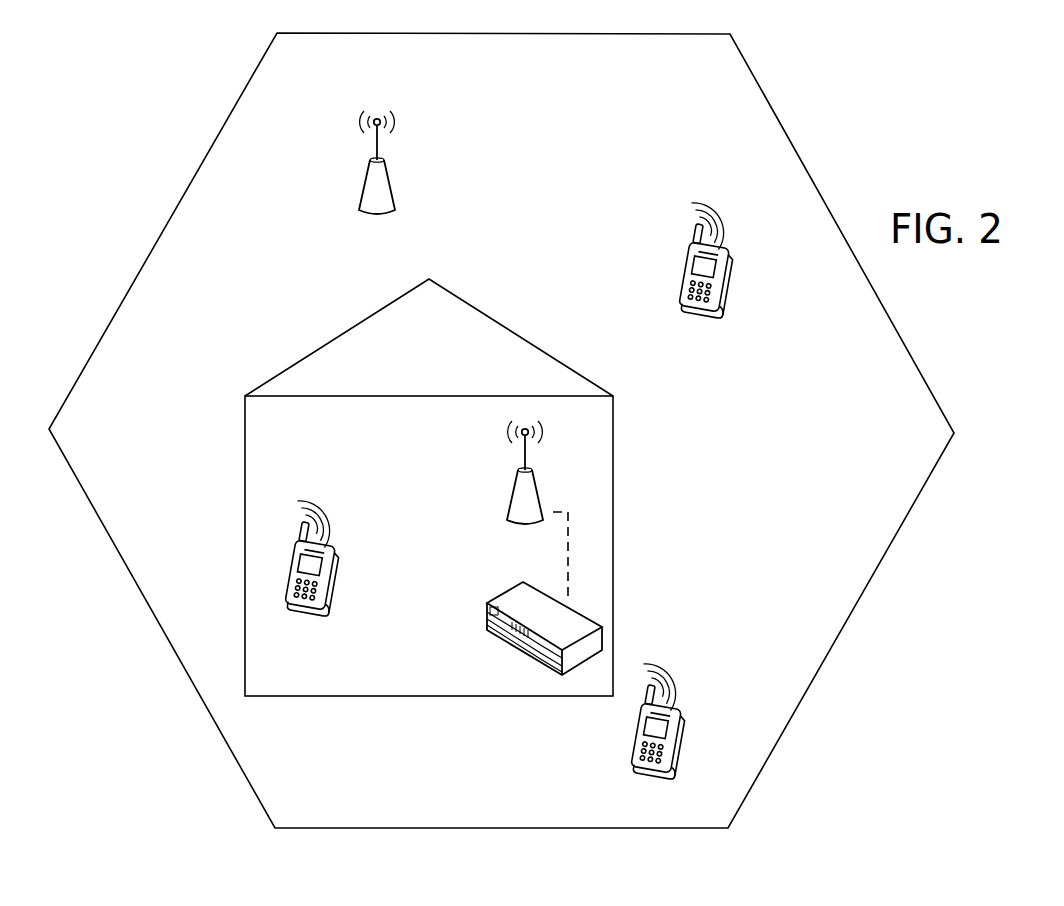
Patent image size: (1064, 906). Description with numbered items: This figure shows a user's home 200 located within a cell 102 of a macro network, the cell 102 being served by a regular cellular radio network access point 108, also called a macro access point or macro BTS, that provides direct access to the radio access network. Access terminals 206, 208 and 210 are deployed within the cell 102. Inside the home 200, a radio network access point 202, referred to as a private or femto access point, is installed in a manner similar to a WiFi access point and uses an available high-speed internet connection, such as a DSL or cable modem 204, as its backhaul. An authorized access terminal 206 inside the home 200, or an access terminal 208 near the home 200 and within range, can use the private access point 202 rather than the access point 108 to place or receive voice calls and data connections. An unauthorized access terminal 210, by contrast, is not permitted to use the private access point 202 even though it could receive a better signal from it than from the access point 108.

The cell 102 is at (220, 100).
The access point 108 is at (360, 220).
The user's home 200 is at (370, 699).
The radio network access point 202 is at (504, 522).
The DSL or cable modem 204 is at (532, 664).
The access terminal 206 is at (297, 598).
The access terminal 208 is at (690, 300).
The access terminal 210 is at (645, 763).